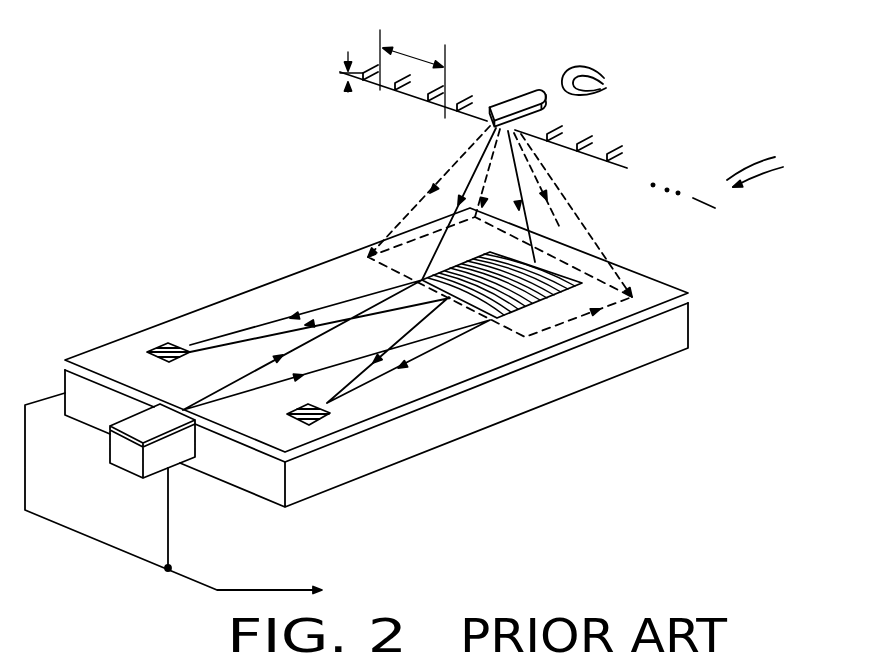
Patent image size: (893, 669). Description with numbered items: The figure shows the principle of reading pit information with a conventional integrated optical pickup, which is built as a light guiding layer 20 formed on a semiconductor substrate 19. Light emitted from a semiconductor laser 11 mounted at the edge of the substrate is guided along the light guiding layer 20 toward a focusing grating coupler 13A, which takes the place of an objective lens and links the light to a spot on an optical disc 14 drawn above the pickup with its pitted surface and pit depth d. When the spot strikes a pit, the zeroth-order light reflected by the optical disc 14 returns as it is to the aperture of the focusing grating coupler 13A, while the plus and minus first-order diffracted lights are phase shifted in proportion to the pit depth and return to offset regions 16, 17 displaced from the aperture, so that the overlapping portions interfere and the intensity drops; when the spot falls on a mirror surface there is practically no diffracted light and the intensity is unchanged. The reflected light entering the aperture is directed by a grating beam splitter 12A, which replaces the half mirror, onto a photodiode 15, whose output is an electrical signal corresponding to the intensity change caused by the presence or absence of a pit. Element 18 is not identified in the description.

The semiconductor laser 11 is at (118, 462).
The grating beam splitter 12A is at (500, 320).
The focusing grating coupler 13A is at (556, 258).
The optical disc 14 is at (724, 208).
The photodiode 15 is at (158, 347).
The offset region 16 is at (598, 330).
The offset region 17 is at (388, 238).
The light source element 18 is at (522, 92).
The semiconductor substrate 19 is at (688, 337).
The light guiding layer 20 is at (688, 295).